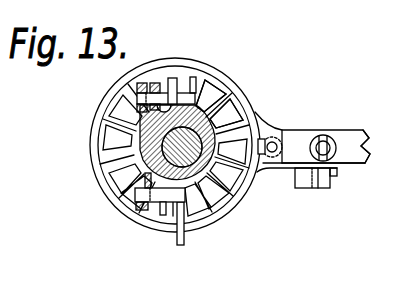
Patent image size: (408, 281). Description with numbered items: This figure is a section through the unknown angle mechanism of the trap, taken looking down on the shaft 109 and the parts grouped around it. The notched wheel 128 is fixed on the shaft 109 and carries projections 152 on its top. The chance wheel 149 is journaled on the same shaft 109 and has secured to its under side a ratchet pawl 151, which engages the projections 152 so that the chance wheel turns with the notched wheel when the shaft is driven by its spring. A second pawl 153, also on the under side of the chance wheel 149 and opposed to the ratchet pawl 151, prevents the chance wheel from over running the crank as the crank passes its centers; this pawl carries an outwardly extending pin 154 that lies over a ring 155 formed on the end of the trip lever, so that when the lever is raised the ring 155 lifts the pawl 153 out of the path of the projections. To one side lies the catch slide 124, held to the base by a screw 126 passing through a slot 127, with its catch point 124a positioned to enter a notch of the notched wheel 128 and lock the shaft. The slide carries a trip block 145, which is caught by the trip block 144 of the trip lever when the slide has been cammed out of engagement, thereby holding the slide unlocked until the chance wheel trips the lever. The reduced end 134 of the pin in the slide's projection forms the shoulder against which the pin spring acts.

The shaft 109 is at (142, 190).
The catch slide 124 is at (348, 166).
The catch point 124a is at (273, 138).
The screw 126 is at (326, 141).
The slot 127 is at (338, 150).
The notched wheel 128 is at (118, 146).
The reduced end 134 is at (277, 143).
The trip block 144 is at (300, 184).
The trip block 145 is at (320, 189).
The chance wheel 149 is at (199, 116).
The ratchet pawl 151 is at (167, 97).
The projections 152 is at (200, 88).
The second pawl 153 is at (167, 200).
The pin 154 is at (186, 234).
The ring 155 is at (104, 178).